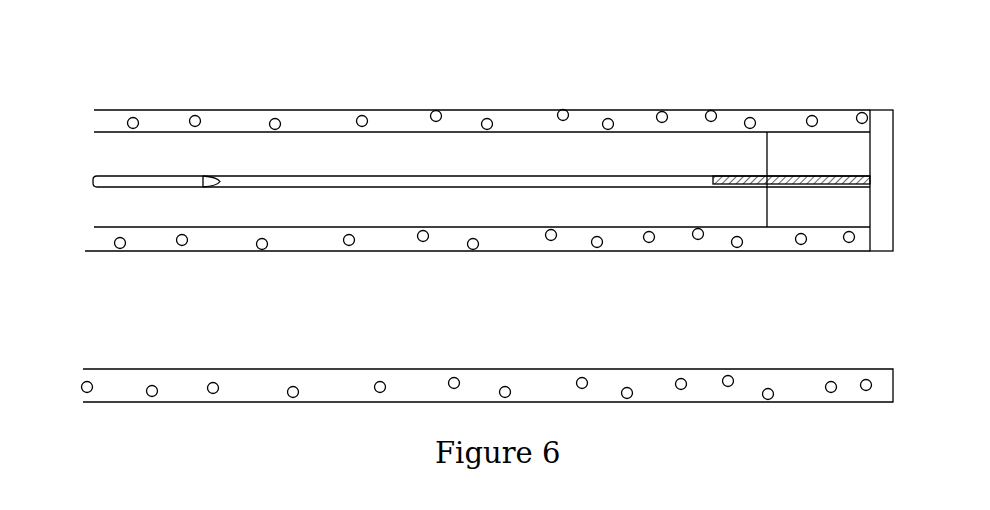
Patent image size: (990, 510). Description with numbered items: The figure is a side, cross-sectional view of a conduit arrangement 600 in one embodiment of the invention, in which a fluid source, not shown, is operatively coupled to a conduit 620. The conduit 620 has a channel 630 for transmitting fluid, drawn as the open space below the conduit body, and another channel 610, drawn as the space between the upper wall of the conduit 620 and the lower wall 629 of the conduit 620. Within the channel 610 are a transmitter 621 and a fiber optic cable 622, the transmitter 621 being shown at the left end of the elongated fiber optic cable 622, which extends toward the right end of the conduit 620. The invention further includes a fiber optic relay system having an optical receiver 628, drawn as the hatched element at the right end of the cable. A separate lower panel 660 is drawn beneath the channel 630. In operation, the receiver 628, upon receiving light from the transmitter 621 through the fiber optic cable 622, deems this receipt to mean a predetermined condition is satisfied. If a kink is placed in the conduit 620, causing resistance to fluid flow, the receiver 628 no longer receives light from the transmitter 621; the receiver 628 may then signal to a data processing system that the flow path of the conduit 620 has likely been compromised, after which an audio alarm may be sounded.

The insulation assembly 600 is at (587, 110).
The channel 610 is at (447, 150).
The conduit 620 is at (482, 85).
The transmitter 621 is at (120, 176).
The fiber optic cable 622 is at (677, 175).
The optical receiver 628 is at (852, 172).
The lower panel 629 is at (863, 238).
The channel 630 is at (813, 318).
The base panel 660 is at (887, 380).